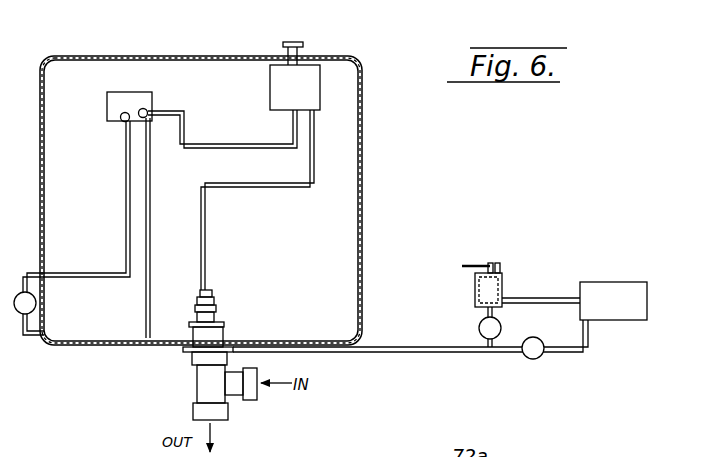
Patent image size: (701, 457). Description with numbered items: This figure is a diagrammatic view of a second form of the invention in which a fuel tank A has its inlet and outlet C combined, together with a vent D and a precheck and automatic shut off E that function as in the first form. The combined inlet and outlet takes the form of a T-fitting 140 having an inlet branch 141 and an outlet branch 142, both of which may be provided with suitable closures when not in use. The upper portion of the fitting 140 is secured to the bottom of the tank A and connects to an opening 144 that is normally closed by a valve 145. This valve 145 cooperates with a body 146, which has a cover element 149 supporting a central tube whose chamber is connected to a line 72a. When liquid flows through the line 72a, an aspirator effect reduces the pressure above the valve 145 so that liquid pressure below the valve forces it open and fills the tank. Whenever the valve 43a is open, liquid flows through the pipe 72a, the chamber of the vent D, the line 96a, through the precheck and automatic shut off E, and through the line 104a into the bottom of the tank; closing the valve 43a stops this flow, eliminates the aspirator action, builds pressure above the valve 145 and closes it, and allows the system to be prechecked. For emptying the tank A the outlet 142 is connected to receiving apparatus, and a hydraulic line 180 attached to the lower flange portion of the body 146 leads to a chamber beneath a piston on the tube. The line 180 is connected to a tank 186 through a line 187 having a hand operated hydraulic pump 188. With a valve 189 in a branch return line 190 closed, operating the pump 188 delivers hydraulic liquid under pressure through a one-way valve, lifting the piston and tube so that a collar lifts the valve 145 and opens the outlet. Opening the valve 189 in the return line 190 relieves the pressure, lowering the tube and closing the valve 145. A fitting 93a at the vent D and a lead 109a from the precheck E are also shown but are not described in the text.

The fuel tank A is at (367, 208).
The vent D is at (302, 82).
The precheck and automatic shut off E is at (115, 106).
The vent fitting 93a is at (290, 42).
The line 96a is at (220, 143).
The line 104a is at (127, 208).
The lead wire 109a is at (152, 257).
The line 72a is at (206, 238).
The valve 43a is at (36, 303).
The cover element 149 is at (214, 310).
The body 146 is at (216, 323).
The valve 145 is at (222, 339).
The opening 144 is at (197, 358).
The T-fitting 140 is at (201, 396).
The outlet C is at (212, 381).
The inlet branch 141 is at (246, 396).
The outlet branch 142 is at (226, 421).
The hydraulic line 180 is at (405, 353).
The tank 186 is at (621, 290).
The line 187 is at (533, 298).
The hand operated hydraulic pump 188 is at (477, 299).
The valve 189 is at (527, 359).
The branch return line 190 is at (567, 353).